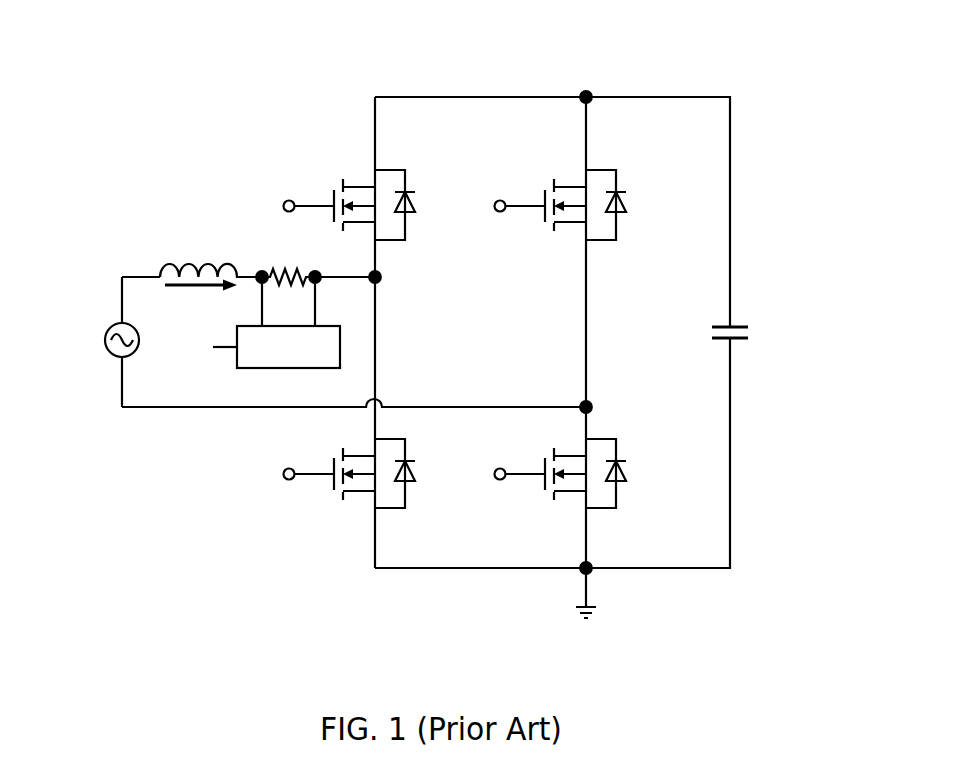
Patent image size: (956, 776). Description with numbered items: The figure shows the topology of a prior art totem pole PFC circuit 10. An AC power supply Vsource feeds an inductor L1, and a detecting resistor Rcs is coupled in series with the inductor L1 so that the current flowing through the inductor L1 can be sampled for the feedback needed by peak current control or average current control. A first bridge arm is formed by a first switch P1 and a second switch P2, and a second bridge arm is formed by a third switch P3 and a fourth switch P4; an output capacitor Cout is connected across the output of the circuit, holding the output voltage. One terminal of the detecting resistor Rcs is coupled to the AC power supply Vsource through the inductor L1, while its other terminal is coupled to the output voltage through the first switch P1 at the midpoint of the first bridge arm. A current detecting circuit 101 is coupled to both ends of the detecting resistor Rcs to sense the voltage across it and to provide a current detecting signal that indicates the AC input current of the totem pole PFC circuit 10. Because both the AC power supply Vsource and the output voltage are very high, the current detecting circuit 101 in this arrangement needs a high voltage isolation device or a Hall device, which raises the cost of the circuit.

The totem pole PFC circuit 10 is at (811, 67).
The current detecting circuit 101 is at (276, 322).
The first switch P1 is at (350, 193).
The second switch P2 is at (350, 488).
The third switch P3 is at (561, 488).
The fourth switch P4 is at (561, 193).
The inductor L1 is at (211, 257).
The detecting resistor Rcs is at (318, 266).
The output capacitor Cout is at (752, 335).
The AC power supply Vsource is at (87, 340).